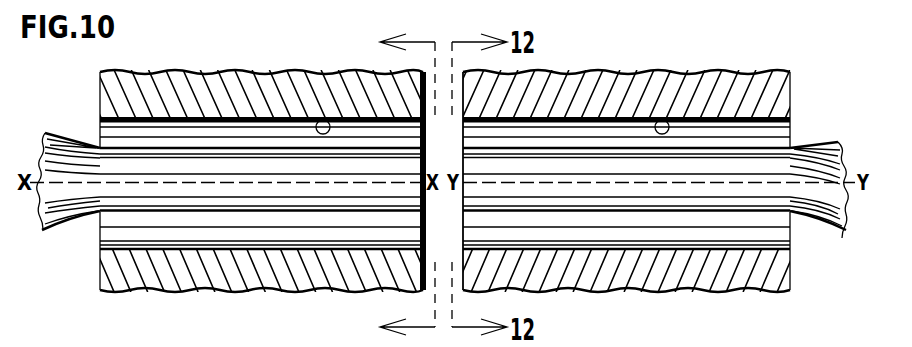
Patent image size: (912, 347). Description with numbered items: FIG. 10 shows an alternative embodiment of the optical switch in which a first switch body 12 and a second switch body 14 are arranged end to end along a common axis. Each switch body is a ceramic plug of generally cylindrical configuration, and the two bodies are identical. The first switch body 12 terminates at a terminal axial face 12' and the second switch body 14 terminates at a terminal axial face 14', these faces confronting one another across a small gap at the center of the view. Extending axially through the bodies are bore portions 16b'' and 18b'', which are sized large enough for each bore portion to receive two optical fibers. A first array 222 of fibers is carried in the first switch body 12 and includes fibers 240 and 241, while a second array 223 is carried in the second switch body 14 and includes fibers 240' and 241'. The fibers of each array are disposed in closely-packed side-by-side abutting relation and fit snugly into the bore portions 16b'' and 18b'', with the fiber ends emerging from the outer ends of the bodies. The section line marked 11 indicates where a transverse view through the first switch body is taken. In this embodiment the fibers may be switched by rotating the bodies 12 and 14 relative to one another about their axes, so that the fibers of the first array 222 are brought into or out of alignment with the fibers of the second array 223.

The first switch body 12 is at (231, 153).
The second switch body 14 is at (650, 153).
The terminal axial face 12' is at (403, 62).
The terminal axial face 14' is at (482, 63).
The bore portion 16b'' is at (301, 77).
The bore portion 18b'' is at (691, 75).
The first array 222 is at (77, 135).
The second array 223 is at (803, 138).
The fiber 240 is at (58, 156).
The fiber 240' is at (825, 237).
The fiber 241 is at (71, 242).
The fiber 241' is at (826, 162).
The section line 11- 11 is at (396, 186).